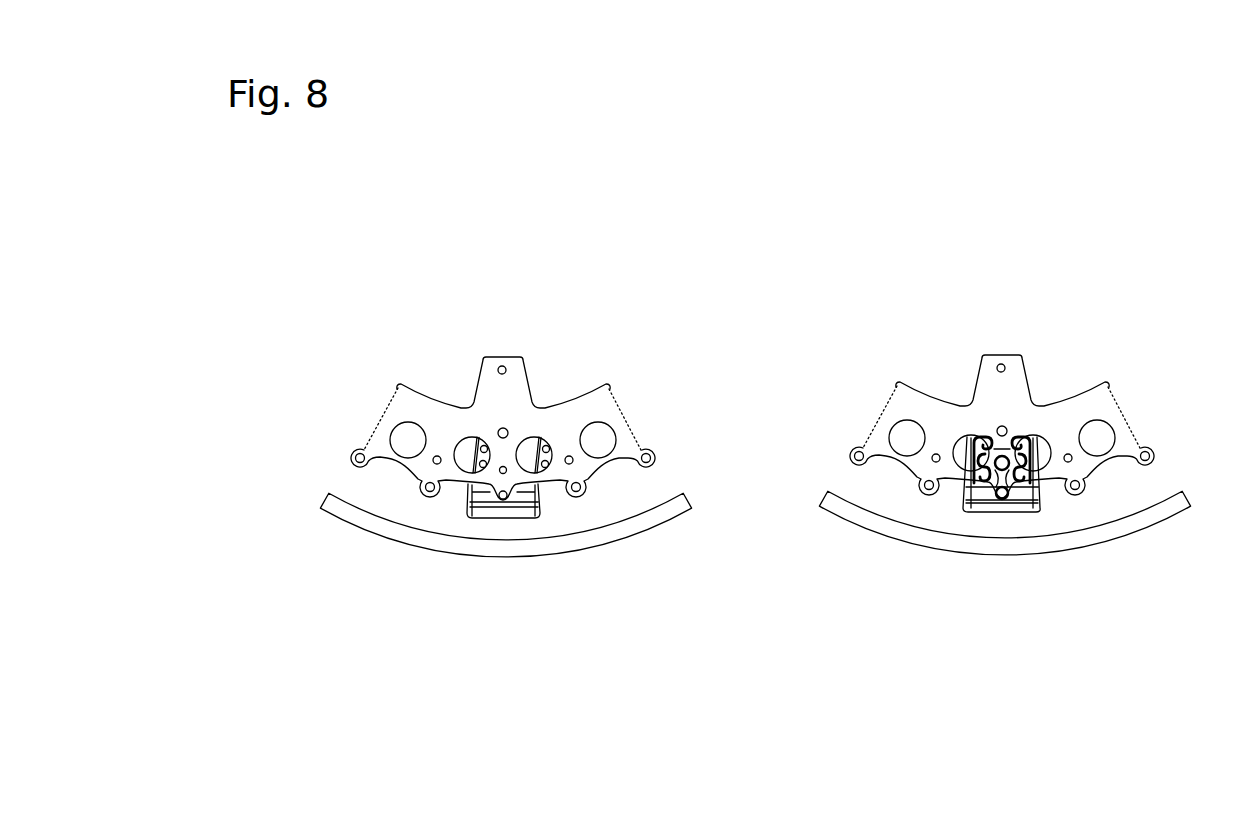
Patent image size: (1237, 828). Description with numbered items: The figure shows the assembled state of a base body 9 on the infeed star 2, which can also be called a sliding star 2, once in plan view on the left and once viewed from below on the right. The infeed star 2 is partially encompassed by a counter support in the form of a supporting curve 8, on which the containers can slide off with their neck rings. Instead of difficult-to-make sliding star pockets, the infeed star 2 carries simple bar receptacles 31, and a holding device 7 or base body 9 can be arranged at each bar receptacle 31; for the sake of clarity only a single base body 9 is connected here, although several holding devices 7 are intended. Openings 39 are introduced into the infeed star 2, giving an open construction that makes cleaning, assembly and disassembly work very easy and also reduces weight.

The infeed star 2 is at (393, 405).
The holding device 7 is at (753, 556).
The supporting curve 8 is at (407, 540).
The base body 9 is at (546, 524).
The bar receptacle 31 is at (415, 495).
The opening 39 is at (887, 428).